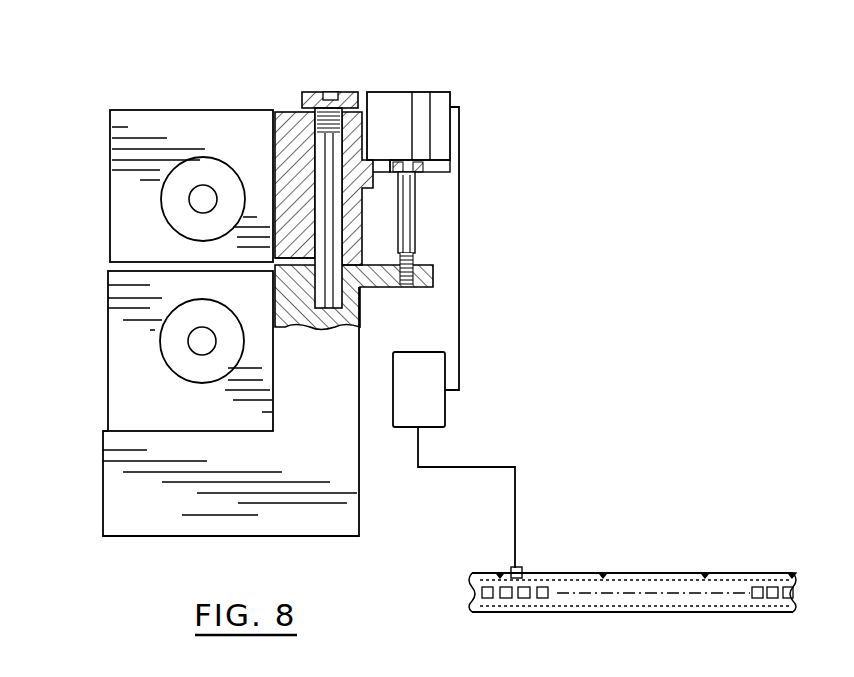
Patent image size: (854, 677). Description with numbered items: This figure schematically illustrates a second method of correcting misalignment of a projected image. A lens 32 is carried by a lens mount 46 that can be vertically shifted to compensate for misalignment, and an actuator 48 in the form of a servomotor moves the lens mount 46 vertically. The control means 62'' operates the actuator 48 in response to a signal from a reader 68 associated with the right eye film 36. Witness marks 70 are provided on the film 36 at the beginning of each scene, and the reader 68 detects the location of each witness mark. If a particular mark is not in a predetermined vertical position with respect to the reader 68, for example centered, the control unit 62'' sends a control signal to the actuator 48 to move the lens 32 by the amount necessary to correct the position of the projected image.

The lens mount 46 is at (175, 132).
The lens 32 is at (218, 153).
The actuator 48 is at (400, 91).
The control means 62'' is at (461, 460).
The right eye film 36 is at (578, 613).
The reader 68 is at (522, 569).
The witness marks 70 is at (500, 572).